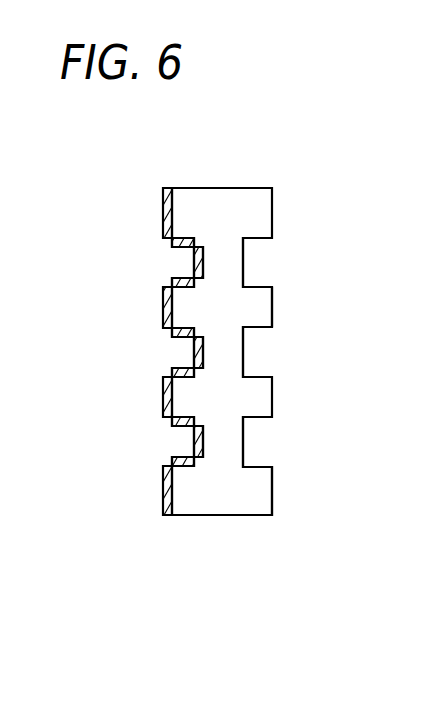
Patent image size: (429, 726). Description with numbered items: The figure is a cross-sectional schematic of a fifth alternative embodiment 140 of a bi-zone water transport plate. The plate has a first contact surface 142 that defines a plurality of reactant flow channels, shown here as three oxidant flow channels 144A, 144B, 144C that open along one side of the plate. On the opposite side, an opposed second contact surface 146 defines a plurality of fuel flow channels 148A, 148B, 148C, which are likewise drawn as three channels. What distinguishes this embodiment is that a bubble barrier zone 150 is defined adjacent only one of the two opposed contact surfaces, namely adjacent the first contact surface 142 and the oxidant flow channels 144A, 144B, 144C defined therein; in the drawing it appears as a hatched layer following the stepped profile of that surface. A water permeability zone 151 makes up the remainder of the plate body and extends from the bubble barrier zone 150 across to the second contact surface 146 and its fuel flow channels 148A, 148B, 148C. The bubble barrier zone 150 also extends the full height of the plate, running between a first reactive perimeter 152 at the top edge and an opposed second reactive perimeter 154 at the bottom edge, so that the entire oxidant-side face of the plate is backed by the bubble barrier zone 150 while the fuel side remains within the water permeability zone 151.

The fifth alternative embodiment of a bi-zone water transport plate 140 is at (197, 320).
The first contact surface 142 is at (163, 310).
The oxidant flow channel 144A is at (165, 263).
The oxidant flow channel 144B is at (165, 352).
The oxidant flow channel 144C is at (165, 442).
The second contact surface 146 is at (272, 305).
The fuel flow channel 148A is at (274, 264).
The fuel flow channel 148B is at (274, 351).
The fuel flow channel 148C is at (274, 440).
The bubble barrier zone 150 is at (163, 207).
The water permeability zone 151 is at (254, 491).
The first reactive perimeter 152 is at (250, 188).
The second reactive perimeter 154 is at (193, 515).